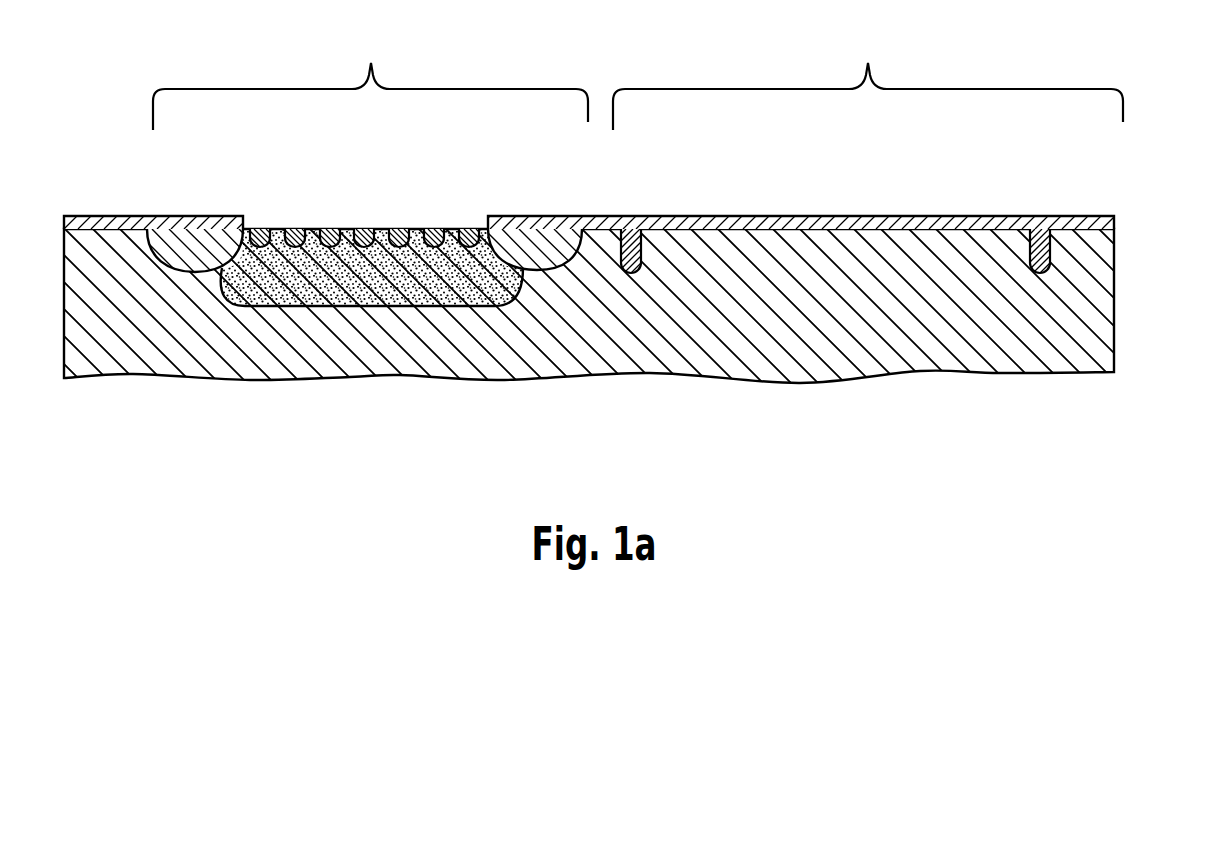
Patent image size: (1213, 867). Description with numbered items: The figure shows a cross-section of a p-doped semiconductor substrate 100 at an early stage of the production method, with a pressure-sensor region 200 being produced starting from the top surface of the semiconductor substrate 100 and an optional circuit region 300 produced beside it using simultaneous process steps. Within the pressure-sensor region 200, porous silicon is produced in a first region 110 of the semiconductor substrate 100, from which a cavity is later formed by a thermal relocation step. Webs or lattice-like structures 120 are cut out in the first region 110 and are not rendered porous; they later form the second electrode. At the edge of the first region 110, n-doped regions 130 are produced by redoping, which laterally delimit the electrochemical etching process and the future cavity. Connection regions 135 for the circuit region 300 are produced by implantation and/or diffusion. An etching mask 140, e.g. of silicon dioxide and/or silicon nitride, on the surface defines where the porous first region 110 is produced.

The semiconductor substrate 100 is at (1107, 330).
The first region 110 is at (307, 283).
The lattice-like structures 120 is at (293, 232).
The n-doped regions 130 is at (197, 247).
The connection regions 135 is at (632, 240).
The etching mask 140 is at (132, 223).
The pressure-sensor region 200 is at (370, 78).
The circuit region 300 is at (868, 78).